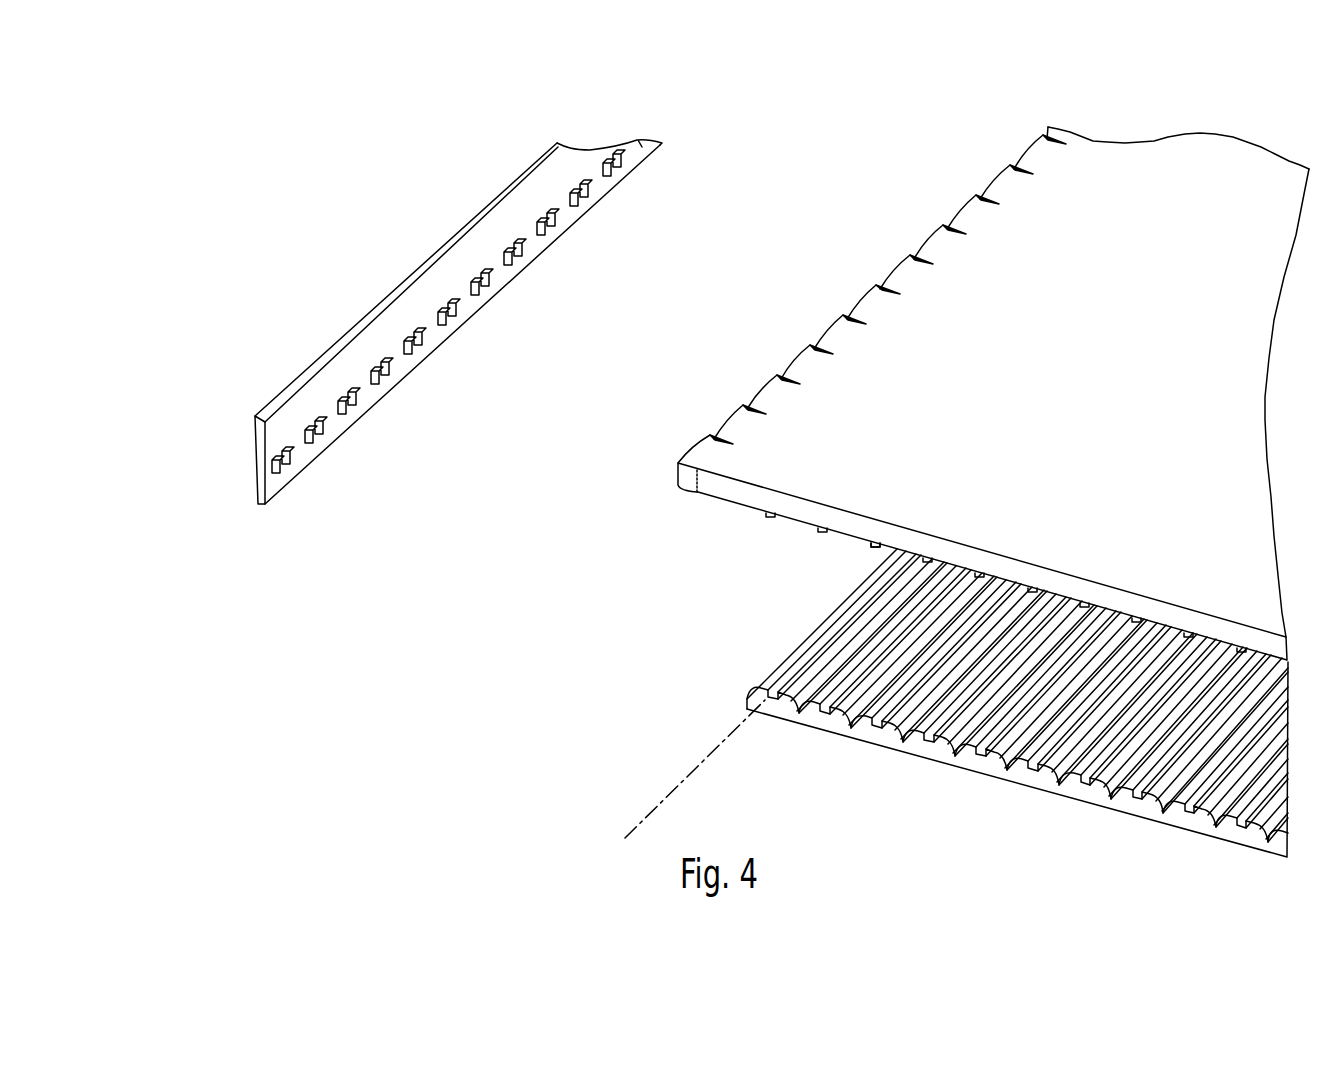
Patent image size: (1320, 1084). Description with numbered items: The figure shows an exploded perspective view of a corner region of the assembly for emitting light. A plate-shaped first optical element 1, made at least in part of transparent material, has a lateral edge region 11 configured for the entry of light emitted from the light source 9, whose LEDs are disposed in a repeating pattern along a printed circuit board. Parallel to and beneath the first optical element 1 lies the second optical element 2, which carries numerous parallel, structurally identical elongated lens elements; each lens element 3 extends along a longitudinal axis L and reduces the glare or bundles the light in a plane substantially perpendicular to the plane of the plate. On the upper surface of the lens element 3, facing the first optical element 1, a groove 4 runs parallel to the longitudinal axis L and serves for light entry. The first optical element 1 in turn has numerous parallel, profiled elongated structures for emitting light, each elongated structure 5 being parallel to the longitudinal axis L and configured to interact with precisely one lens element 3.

The first optical element 1 is at (990, 393).
The second optical element 2 is at (1015, 703).
The lens element 3 is at (843, 659).
The groove 4 is at (775, 692).
The elongated structure 5 is at (750, 542).
The light source 9 is at (303, 458).
The lateral edge region 11 is at (765, 392).
The longitudinal axis L is at (678, 788).